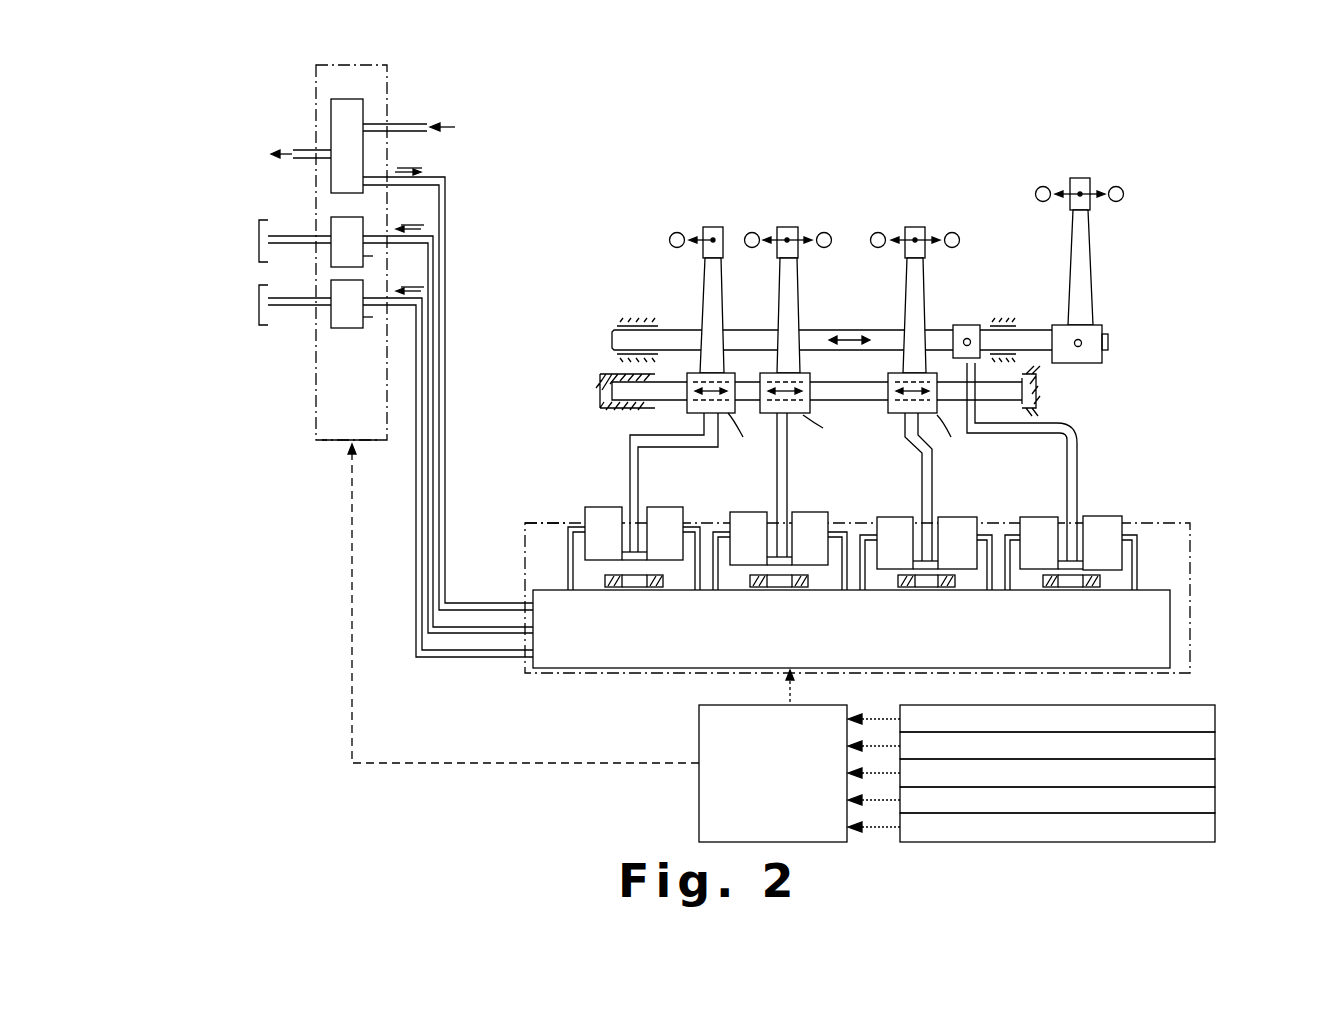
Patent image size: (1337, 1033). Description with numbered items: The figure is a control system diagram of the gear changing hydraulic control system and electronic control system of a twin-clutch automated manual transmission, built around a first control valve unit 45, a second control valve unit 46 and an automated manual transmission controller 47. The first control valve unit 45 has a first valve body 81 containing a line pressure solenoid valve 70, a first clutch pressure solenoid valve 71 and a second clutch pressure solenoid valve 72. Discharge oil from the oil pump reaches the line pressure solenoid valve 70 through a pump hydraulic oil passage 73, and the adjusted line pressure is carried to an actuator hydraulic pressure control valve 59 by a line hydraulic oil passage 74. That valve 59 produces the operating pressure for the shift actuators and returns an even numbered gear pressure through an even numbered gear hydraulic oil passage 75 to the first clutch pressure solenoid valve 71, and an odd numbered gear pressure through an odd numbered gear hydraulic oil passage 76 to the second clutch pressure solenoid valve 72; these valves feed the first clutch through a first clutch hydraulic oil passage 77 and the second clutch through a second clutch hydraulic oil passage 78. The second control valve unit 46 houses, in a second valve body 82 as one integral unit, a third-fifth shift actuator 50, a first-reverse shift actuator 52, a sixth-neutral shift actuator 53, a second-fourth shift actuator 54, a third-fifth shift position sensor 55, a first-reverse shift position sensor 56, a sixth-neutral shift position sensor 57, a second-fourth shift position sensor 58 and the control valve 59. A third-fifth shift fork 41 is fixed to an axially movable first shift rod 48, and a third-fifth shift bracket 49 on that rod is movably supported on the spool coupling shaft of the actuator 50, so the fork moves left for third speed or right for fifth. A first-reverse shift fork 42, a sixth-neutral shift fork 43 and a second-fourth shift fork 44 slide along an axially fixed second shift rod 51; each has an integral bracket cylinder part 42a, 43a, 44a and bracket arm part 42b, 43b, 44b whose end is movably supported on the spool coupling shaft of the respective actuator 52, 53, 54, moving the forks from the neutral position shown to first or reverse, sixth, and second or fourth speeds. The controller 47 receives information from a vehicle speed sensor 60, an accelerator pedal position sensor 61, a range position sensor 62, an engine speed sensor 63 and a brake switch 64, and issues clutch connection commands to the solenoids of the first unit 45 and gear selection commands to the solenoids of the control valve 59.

The 3-5 shift fork 41 is at (1092, 248).
The 1-R shift fork 42 is at (928, 296).
The bracket cylinder part 42a is at (961, 439).
The bracket arm part 42b is at (934, 482).
The 6-N shift fork 43 is at (703, 285).
The bracket cylinder part 43a is at (748, 438).
The bracket arm part 43b is at (695, 448).
The 2-4 shift fork 44 is at (800, 292).
The bracket cylinder part 44a is at (828, 436).
The bracket arm part 44b is at (789, 478).
The first control valve unit 45 is at (338, 224).
The second control valve unit 46 is at (1168, 517).
The automated manual transmission controller 47 is at (699, 722).
The first shift rod 48 is at (848, 328).
The 3-5 shift bracket 49 is at (1037, 427).
The 3-5 shift actuator 50 is at (1072, 558).
The second shift rod 51 is at (842, 383).
The 1-R shift actuator 52 is at (940, 565).
The 6-N shift actuator 53 is at (634, 548).
The 2-4 shift actuator 54 is at (793, 564).
The 3-5 shift position sensor 55 is at (1097, 590).
The 1-R shift position sensor 56 is at (948, 590).
The 6-N shift position sensor 57 is at (655, 590).
The 2-4 shift position sensor 58 is at (803, 590).
The actuator hydraulic pressure control valve 59 is at (592, 672).
The vehicle speed sensor 60 is at (1215, 714).
The accelerator pedal position sensor 61 is at (1215, 741).
The range position sensor 62 is at (1215, 769).
The engine speed sensor 63 is at (1215, 796).
The brake switch 64 is at (1215, 824).
The line pressure solenoid valve 70 is at (331, 130).
The first clutch pressure solenoid valve 71 is at (331, 225).
The second clutch pressure solenoid valve 72 is at (346, 328).
The pump hydraulic oil passage 73 is at (405, 124).
The line hydraulic oil passage 74 is at (446, 272).
The even numbered gear hydraulic oil passage 75 is at (434, 338).
The odd numbered gear hydraulic oil passage 76 is at (423, 398).
The first clutch hydraulic oil passage 77 is at (297, 247).
The second clutch hydraulic oil passage 78 is at (290, 310).
The first valve body 81 is at (387, 76).
The second valve body 82 is at (551, 520).